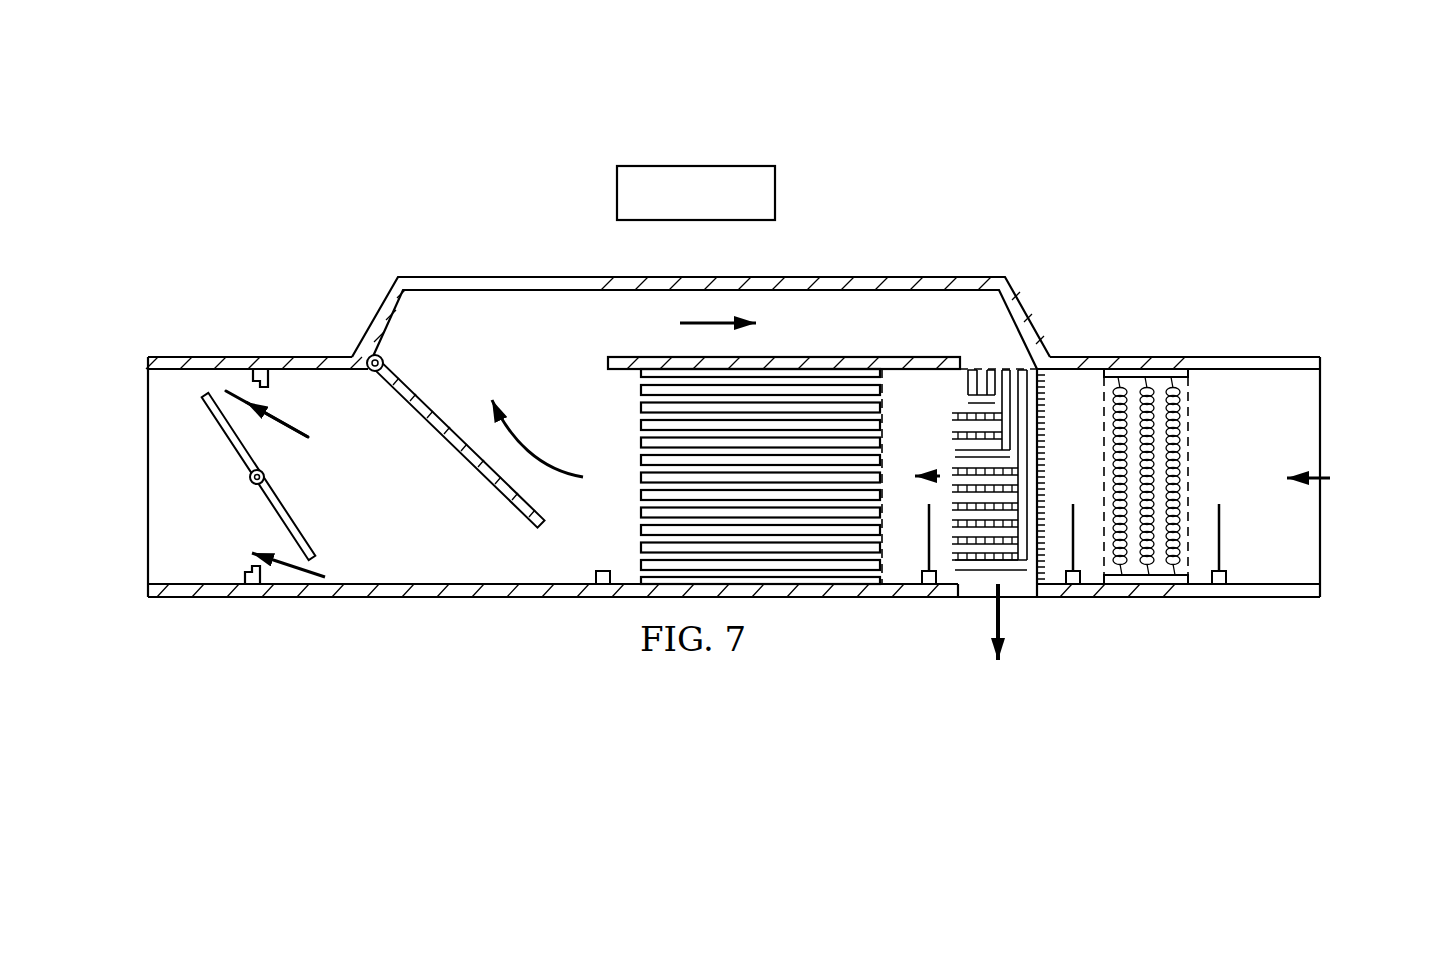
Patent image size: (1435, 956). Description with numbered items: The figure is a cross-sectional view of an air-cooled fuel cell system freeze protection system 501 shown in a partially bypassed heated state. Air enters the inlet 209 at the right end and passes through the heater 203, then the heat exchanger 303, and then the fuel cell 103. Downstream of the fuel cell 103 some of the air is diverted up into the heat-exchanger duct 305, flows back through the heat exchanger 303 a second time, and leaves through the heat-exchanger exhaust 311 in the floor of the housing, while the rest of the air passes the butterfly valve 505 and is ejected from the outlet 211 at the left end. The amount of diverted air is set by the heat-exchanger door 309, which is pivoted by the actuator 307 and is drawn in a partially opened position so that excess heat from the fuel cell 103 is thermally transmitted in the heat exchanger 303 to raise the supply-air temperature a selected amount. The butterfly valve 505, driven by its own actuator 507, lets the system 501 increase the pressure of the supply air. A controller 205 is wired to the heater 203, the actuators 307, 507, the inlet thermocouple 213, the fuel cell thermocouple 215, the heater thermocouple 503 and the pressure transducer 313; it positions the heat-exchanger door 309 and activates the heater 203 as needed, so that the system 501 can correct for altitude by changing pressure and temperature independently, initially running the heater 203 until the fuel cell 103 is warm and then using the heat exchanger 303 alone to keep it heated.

The air-cooled fuel cell system freeze protection system 501 is at (280, 122).
The controller 205 is at (617, 190).
The heat-exchanger duct 305 is at (455, 277).
The actuator 307 is at (386, 358).
The heat-exchanger door 309 is at (452, 446).
The fuel cell 103 is at (641, 462).
The outlet 211 is at (124, 411).
The actuator 507 is at (250, 483).
The butterfly valve 505 is at (306, 510).
The pressure transducer 313 is at (602, 569).
The heat exchanger 303 is at (1043, 408).
The heater 203 is at (1192, 418).
The inlet 209 is at (1347, 545).
The inlet thermocouple 213 is at (1228, 576).
The fuel cell thermocouple 215 is at (922, 578).
The heat-exchanger exhaust 311 is at (978, 598).
The heater thermocouple 503 is at (1066, 578).